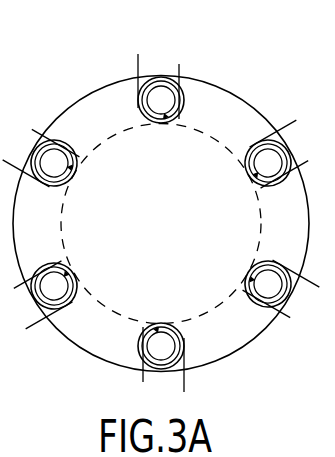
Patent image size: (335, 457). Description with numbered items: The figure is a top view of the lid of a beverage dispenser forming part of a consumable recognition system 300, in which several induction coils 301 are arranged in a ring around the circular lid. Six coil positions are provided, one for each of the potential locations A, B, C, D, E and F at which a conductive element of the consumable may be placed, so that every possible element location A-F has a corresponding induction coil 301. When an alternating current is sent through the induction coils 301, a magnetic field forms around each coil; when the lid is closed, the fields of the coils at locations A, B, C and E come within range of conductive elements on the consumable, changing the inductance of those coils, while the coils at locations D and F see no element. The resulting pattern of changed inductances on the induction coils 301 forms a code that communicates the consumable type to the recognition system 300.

The consumable recognition system 300 is at (103, 74).
The induction coils 301 is at (184, 100).
The location A is at (161, 88).
The location B is at (278, 157).
The location C is at (278, 290).
The location D is at (161, 357).
The location E is at (44, 292).
The location F is at (44, 157).